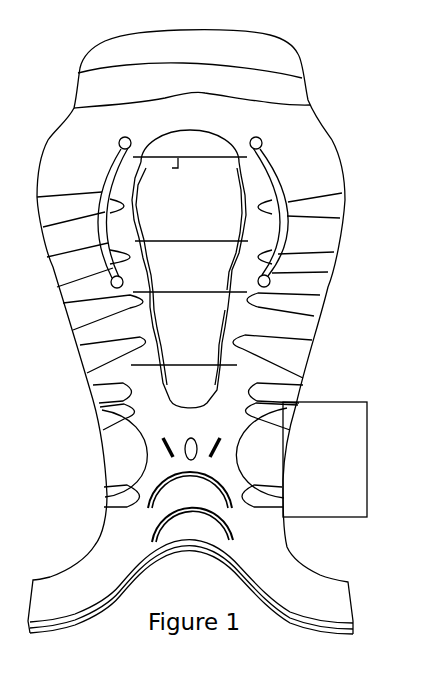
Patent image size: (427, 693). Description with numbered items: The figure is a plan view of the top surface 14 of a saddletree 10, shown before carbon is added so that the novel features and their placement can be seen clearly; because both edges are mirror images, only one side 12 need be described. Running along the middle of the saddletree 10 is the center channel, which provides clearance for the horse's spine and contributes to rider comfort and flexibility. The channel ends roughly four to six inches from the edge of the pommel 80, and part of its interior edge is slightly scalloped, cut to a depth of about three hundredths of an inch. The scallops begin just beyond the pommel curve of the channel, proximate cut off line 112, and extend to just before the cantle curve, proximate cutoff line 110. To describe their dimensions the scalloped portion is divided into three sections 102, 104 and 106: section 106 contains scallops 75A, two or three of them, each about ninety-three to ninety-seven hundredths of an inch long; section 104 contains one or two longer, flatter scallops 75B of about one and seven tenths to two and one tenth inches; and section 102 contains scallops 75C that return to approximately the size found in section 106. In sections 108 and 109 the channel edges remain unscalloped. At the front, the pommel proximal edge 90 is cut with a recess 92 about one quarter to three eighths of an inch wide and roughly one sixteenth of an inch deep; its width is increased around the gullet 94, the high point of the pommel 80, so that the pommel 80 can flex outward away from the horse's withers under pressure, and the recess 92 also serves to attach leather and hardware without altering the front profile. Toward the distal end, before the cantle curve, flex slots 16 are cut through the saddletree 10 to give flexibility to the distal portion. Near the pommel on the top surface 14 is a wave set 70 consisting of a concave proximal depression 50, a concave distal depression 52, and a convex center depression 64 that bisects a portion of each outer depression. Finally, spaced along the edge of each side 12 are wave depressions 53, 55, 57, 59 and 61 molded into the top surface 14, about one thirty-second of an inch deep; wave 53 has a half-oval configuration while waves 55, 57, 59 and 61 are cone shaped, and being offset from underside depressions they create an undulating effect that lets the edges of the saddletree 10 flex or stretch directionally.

The saddletree 10 is at (309, 78).
The top surface 14 is at (302, 155).
The side 12 is at (347, 167).
The flex slots 16 is at (107, 193).
The wave depression 61 is at (333, 210).
The wave depression 59 is at (323, 272).
The wave depression 57 is at (305, 312).
The wave depression 55 is at (293, 350).
The wave depression 53 is at (277, 388).
The wave set 70 is at (367, 440).
The distal depression 52 is at (280, 435).
The center depression 64 is at (275, 477).
The proximal depression 50 is at (273, 510).
The pommel 80 is at (117, 543).
The gullet 94 is at (187, 553).
The recess 92 is at (354, 627).
The proximal edge 90 is at (67, 633).
The section 109 is at (190, 148).
The cutoff line 110 is at (163, 168).
The section 102 is at (189, 236).
The section 104 is at (191, 252).
The section 106 is at (190, 306).
The section 108 is at (191, 359).
The scallops 75C is at (143, 218).
The scallops 75B is at (145, 268).
The scallops 75A is at (157, 343).
The cut off line 112 is at (228, 367).